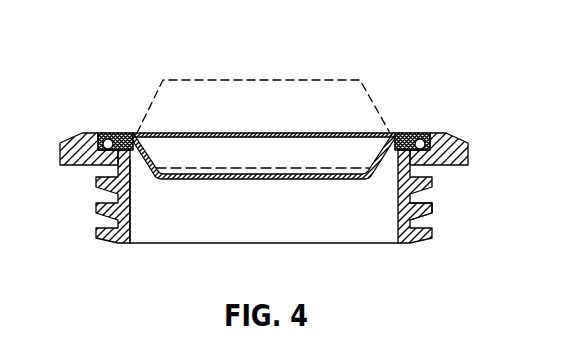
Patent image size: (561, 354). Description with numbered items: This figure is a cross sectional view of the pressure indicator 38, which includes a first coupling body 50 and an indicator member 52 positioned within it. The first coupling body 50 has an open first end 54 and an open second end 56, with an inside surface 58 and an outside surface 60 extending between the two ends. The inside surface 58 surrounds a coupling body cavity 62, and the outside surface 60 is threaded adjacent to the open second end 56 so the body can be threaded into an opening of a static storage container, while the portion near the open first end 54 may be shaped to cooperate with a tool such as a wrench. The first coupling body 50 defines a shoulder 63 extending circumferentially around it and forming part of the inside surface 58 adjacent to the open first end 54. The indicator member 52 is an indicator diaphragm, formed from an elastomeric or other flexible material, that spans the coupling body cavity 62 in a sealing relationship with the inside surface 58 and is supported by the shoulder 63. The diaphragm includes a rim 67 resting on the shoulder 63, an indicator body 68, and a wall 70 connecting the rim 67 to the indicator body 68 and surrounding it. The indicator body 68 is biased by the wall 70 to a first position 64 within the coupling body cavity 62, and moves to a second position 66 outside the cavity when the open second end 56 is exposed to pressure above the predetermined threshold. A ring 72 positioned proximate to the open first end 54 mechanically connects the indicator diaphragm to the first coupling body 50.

The pressure indicator 38 is at (421, 48).
The first coupling body 50 is at (72, 136).
The indicator member 52 is at (282, 131).
The open first end 54 is at (93, 131).
The open second end 56 is at (147, 246).
The inside surface 58 is at (390, 220).
The outside surface 60 is at (431, 234).
The coupling body cavity 62 is at (128, 220).
The shoulder 63 is at (424, 192).
The first position 64 is at (230, 181).
The second position 66 is at (262, 78).
The rim 67 is at (398, 131).
The indicator body 68 is at (320, 181).
The wall 70 is at (150, 156).
The ring 72 is at (420, 131).